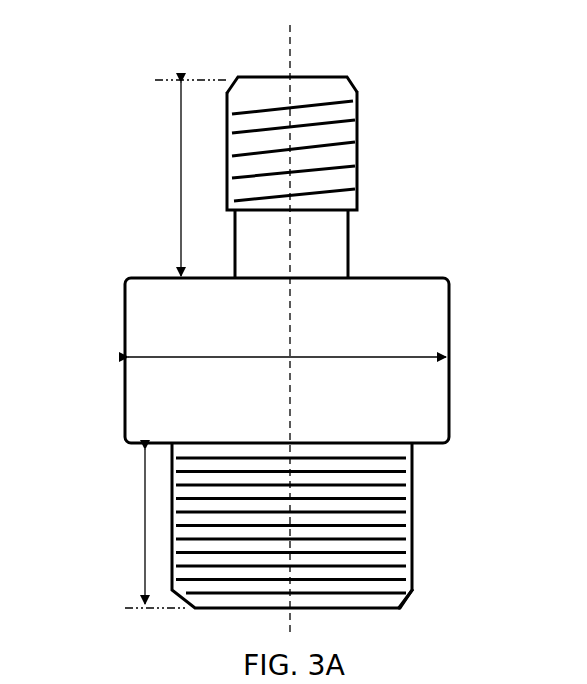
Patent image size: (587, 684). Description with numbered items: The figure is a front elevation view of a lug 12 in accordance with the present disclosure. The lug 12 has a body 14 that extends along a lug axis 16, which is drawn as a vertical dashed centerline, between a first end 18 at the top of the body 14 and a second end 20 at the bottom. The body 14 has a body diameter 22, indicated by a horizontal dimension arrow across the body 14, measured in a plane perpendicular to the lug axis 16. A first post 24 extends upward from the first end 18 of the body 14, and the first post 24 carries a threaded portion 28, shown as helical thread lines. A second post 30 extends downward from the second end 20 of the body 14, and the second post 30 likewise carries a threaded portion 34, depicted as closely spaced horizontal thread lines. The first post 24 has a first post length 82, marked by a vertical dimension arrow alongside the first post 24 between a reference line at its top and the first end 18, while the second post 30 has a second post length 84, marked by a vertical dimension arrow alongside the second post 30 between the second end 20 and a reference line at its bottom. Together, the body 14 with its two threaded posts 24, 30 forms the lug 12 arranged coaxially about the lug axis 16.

The lug 12 is at (134, 122).
The body 14 is at (392, 419).
The lug axis 16 is at (299, 50).
The first end 18 is at (397, 275).
The second end 20 is at (418, 446).
The body diameter 22 is at (385, 352).
The first post 24 is at (367, 107).
The threaded portion 28 is at (340, 160).
The second post 30 is at (424, 591).
The threaded portion 34 is at (394, 497).
The first post length 82 is at (180, 177).
The second post length 84 is at (145, 532).